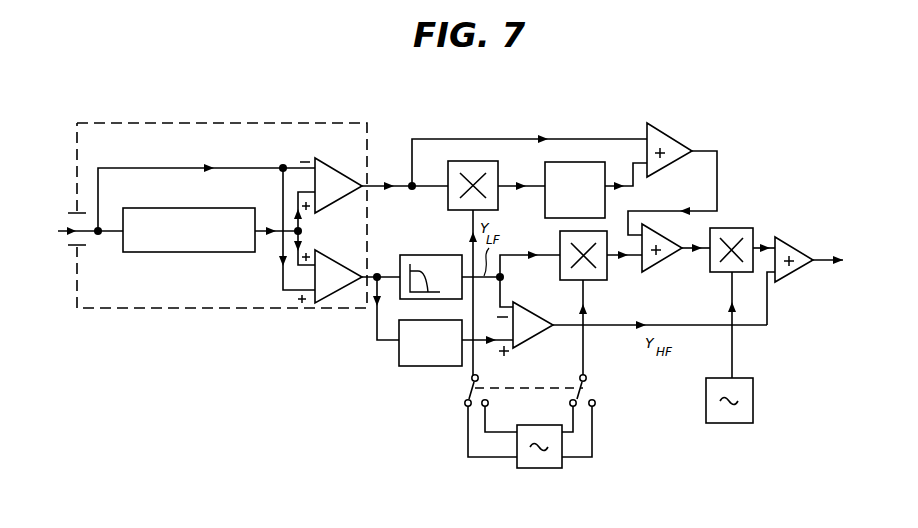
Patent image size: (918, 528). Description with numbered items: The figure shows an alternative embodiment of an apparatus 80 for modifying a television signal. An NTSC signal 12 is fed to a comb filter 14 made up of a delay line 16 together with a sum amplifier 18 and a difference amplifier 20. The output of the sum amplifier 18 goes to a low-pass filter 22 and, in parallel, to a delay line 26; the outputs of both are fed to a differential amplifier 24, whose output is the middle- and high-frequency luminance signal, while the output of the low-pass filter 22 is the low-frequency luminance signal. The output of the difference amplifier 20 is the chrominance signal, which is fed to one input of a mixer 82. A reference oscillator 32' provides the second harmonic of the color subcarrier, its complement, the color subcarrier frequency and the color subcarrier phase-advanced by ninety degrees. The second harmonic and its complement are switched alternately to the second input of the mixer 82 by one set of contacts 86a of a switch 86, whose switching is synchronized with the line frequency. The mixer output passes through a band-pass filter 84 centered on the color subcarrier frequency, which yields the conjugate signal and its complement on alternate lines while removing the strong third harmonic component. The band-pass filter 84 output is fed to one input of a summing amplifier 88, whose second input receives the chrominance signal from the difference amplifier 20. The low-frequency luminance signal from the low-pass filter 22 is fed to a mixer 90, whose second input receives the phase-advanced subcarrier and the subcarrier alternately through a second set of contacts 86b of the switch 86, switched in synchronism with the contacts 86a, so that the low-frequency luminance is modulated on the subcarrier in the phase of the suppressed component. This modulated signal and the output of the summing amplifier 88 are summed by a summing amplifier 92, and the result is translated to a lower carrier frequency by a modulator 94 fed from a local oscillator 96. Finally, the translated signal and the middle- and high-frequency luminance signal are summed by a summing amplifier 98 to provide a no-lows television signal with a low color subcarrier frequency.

The NTSC signal 12 is at (61, 239).
The comb filter 14 is at (258, 123).
The delay line 16 is at (220, 208).
The sum amplifier 18 is at (331, 237).
The difference amplifier 20 is at (323, 158).
The low-pass filter 22 is at (418, 255).
The differential amplifier 24 is at (524, 306).
The delay line 26 is at (397, 358).
The reference oscillator 32' is at (553, 463).
The apparatus 80 is at (435, 114).
The mixer 82 is at (477, 160).
The band-pass filter 84 is at (577, 162).
The switch 86 is at (528, 394).
The set of contacts 86a is at (465, 405).
The second set of contacts 86b is at (596, 406).
The summing amplifier 88 is at (668, 134).
The mixer 90 is at (560, 238).
The summing amplifier 92 is at (660, 261).
The modulator 94 is at (743, 228).
The local oscillator 96 is at (753, 410).
The summing amplifier 98 is at (797, 241).